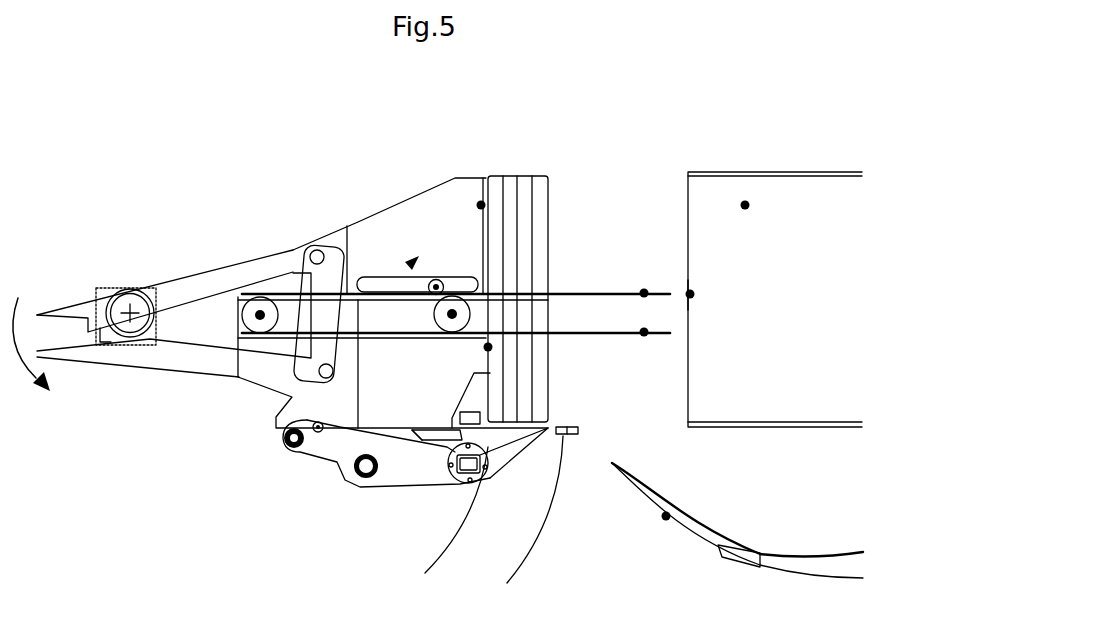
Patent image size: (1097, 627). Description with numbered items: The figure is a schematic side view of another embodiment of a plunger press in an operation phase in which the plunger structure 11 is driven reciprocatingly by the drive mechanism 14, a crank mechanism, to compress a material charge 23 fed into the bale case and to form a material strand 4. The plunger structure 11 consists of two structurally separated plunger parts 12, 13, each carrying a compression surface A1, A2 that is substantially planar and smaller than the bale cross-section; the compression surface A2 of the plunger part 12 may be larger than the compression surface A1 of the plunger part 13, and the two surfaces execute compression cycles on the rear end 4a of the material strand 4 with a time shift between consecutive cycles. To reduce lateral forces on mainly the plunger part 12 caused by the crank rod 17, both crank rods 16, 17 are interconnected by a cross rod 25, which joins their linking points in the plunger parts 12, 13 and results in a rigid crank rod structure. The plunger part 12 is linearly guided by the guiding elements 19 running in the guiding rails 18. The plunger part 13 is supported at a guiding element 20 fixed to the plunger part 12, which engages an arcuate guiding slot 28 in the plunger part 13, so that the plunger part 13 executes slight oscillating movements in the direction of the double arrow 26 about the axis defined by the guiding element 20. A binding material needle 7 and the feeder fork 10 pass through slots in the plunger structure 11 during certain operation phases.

The material strand 4 is at (747, 207).
The rear end of the material strand 4a is at (690, 294).
The binding material needle 7 is at (666, 516).
The feeder fork 10 is at (503, 453).
The plunger structure 11 is at (258, 404).
The plunger part 12 is at (383, 415).
The plunger part 13 is at (358, 222).
The drive mechanism 14 is at (80, 292).
The crank rod 16 is at (183, 290).
The crank rod 17 is at (210, 362).
The guiding rails 18 is at (644, 331).
The guiding elements 19 is at (263, 315).
The guiding element 20 is at (440, 282).
The material charge 23 is at (576, 262).
The cross rod 25 is at (323, 278).
The double arrow 26 is at (408, 270).
The arcuate guiding slot 28 is at (363, 285).
The compression surface A1 is at (488, 347).
The compression surface A2 is at (481, 205).